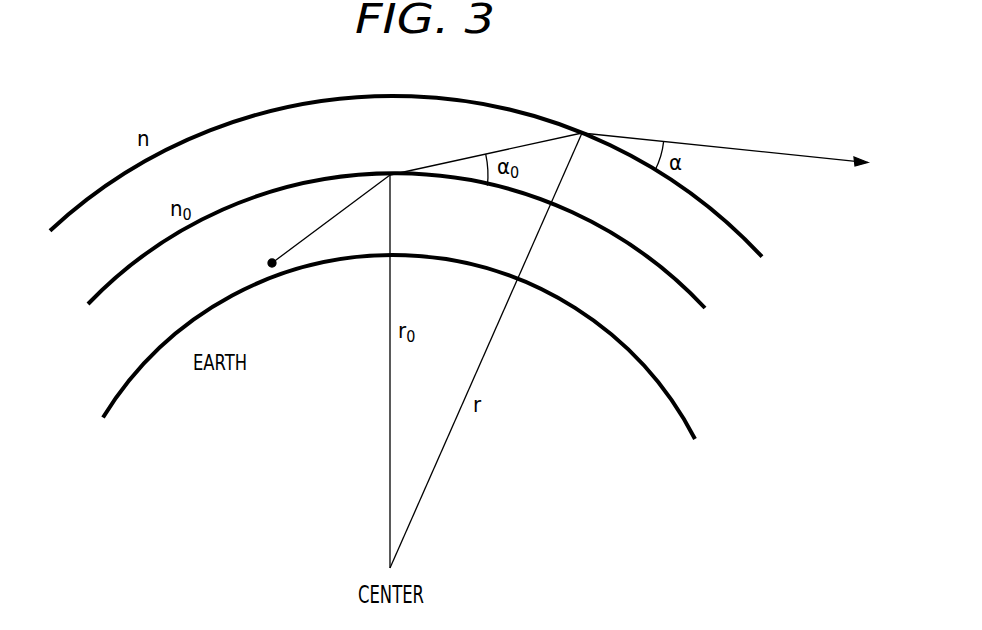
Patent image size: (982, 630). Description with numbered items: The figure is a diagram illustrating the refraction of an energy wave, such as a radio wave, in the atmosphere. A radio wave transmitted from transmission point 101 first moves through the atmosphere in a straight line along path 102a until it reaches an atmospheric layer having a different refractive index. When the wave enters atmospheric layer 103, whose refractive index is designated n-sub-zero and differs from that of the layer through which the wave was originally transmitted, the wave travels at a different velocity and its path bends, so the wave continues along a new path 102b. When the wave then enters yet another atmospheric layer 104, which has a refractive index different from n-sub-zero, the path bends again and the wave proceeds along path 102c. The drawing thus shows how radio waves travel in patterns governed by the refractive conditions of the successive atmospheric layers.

The transmission point 101 is at (268, 264).
The path 102a is at (318, 220).
The path 102b is at (508, 150).
The path 102c is at (708, 145).
The atmospheric layer 103 is at (396, 236).
The atmospheric layer 104 is at (406, 176).